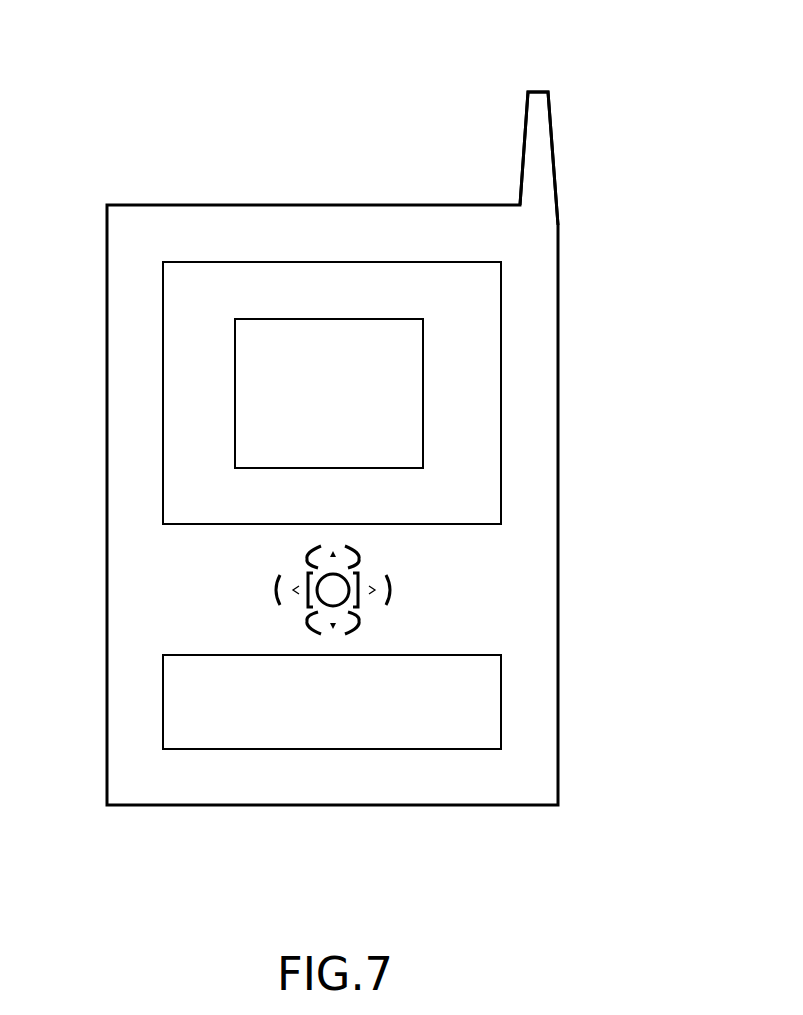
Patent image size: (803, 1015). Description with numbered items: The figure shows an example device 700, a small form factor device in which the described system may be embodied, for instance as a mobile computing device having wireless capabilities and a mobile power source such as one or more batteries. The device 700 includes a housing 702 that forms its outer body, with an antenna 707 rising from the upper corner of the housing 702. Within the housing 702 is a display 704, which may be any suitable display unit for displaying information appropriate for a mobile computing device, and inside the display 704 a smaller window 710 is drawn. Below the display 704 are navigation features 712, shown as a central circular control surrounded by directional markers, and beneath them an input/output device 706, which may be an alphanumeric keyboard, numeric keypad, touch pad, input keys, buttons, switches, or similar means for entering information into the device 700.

The device 700 is at (121, 103).
The housing 702 is at (558, 505).
The display 704 is at (502, 280).
The input/output (I/O) device 706 is at (501, 693).
The antenna 707 is at (523, 141).
The display window 710 is at (423, 412).
The navigation features 712 is at (418, 582).